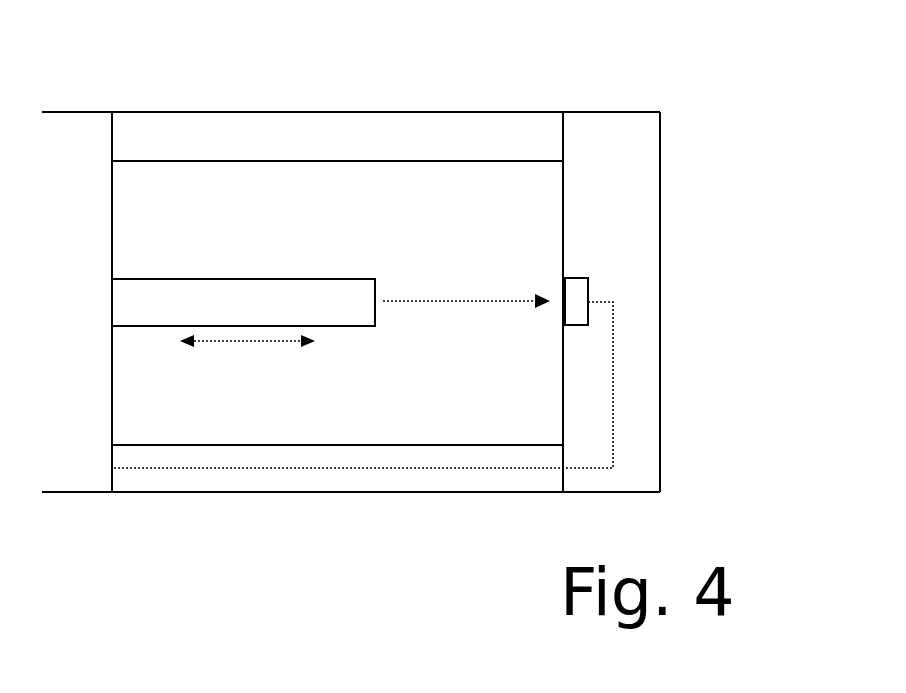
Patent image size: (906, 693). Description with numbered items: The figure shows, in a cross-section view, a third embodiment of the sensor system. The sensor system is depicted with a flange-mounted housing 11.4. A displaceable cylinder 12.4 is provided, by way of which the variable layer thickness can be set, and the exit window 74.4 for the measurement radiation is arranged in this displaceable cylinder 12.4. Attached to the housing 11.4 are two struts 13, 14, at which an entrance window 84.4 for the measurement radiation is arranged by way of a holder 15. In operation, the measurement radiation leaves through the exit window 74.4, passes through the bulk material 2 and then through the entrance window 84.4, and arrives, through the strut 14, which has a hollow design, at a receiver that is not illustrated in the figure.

The housing 11.4 is at (87, 118).
The strut 13 is at (385, 112).
The strut 14 is at (328, 478).
The holder 15 is at (642, 180).
The bulk material 2 is at (383, 418).
The displaceable cylinder 12.4 is at (222, 287).
The exit window 74.4 is at (380, 285).
The entrance window 84.4 is at (562, 305).